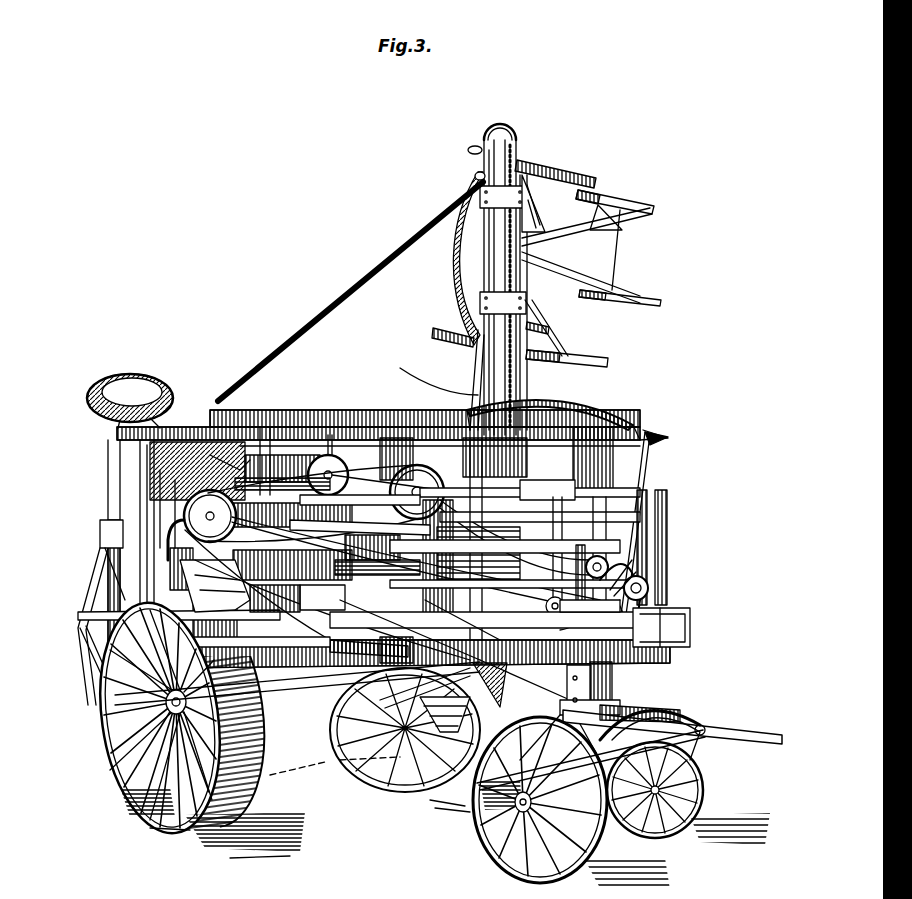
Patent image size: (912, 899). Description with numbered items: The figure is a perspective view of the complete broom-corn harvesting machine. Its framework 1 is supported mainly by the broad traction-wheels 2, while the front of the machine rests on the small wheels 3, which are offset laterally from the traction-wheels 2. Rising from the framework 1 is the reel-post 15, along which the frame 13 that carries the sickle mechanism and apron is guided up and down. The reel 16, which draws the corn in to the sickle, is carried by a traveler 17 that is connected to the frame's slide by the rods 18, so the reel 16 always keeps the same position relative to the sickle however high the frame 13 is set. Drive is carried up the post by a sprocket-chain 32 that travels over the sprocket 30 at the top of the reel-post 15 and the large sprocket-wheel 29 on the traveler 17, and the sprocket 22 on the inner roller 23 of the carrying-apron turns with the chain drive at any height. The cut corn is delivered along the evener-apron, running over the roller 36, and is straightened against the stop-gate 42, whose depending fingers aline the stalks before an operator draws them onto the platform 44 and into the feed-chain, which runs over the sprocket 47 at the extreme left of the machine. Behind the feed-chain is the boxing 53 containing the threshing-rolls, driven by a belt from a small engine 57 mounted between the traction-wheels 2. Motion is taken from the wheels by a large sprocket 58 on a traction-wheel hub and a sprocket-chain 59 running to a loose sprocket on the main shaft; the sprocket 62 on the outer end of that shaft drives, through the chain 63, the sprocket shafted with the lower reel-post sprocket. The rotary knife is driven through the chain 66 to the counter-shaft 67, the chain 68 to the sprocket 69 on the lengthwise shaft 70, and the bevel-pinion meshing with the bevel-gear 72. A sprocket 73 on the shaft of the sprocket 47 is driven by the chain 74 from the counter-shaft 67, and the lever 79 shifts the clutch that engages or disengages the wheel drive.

The framework 1 is at (688, 620).
The traction-wheels 2 is at (245, 781).
The small wheels 3 is at (494, 838).
The frame 13 is at (628, 413).
The reel-post 15 is at (490, 347).
The reel 16 is at (640, 291).
The traveler 17 is at (472, 302).
The rods 18 is at (533, 392).
The sprocket 22 is at (462, 418).
The inner roller 23 is at (417, 410).
The large sprocket-wheel 29 is at (462, 246).
The sprocket 30 is at (504, 128).
The sprocket-chain 32 is at (522, 172).
The roller 36 is at (417, 492).
The stop-gate 42 is at (522, 494).
The platform 44 is at (555, 512).
The sprocket 47 is at (195, 515).
The boxing 53 is at (210, 456).
The small engine 57 is at (328, 757).
The large sprocket 58 is at (370, 724).
The sprocket-chain 59 is at (507, 672).
The sprocket 62 is at (648, 581).
The chain 63 is at (604, 560).
The chain 66 is at (505, 551).
The counter-shaft 67 is at (580, 545).
The chain 68 is at (515, 578).
The sprocket 69 is at (475, 632).
The shaft 70 is at (449, 628).
The bevel-gear 72 is at (637, 567).
The sprocket 73 is at (213, 506).
The chain 74 is at (213, 523).
The lever 79 is at (648, 476).